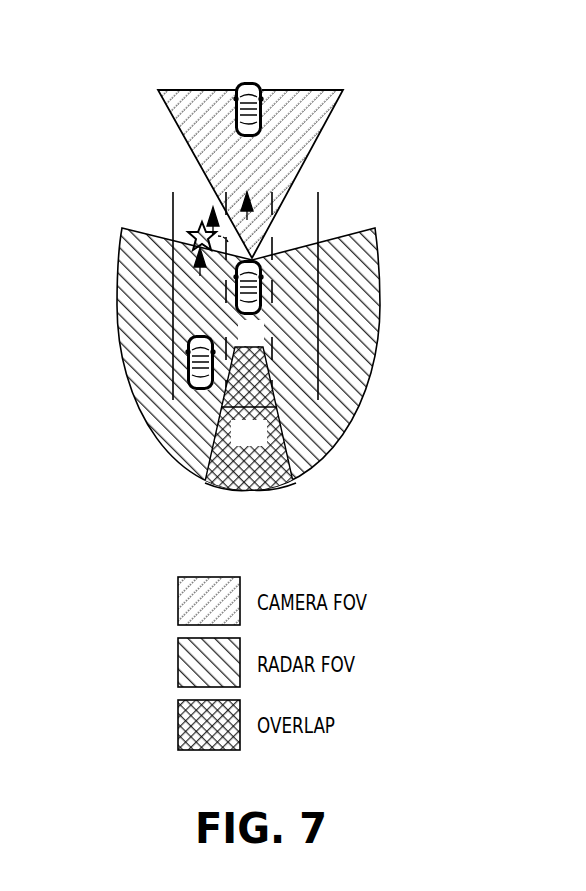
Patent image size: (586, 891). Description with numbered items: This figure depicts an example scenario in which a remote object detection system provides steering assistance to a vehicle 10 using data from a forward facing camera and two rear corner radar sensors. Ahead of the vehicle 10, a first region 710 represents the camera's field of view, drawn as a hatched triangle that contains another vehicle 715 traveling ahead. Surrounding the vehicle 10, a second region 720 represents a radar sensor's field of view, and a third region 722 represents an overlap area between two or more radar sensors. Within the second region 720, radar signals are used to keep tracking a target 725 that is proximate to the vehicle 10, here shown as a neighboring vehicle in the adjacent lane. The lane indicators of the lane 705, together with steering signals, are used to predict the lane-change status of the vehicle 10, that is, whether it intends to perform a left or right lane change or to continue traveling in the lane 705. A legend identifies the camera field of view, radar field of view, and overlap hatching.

The vehicle 10 is at (249, 305).
The lane 705 is at (249, 421).
The first region 710 is at (297, 90).
The leading vehicle in camera field of view 715 is at (243, 81).
The second region 720 is at (118, 318).
The third region 722 is at (279, 478).
The target 725 is at (189, 380).